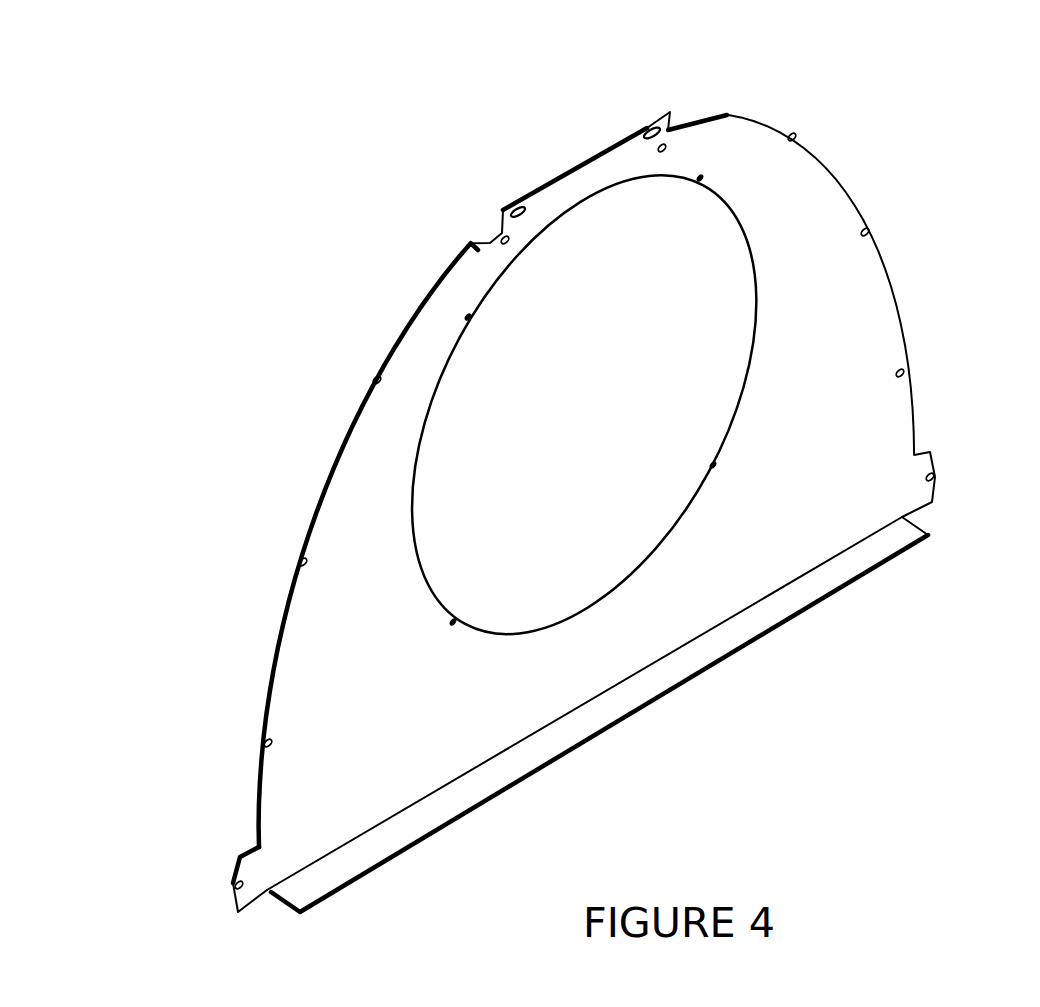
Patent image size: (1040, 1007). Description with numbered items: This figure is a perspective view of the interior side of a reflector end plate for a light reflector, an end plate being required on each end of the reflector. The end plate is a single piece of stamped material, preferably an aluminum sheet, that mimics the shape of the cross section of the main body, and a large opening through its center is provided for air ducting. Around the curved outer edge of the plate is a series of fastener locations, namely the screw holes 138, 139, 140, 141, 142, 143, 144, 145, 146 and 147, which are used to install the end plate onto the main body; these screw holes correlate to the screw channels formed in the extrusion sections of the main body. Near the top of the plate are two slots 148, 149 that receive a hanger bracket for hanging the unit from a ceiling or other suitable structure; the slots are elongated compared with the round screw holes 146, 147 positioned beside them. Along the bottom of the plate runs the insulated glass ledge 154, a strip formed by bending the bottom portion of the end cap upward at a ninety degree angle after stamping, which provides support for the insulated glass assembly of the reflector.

The screw hole 138 is at (934, 477).
The screw hole 139 is at (236, 885).
The screw hole 140 is at (904, 373).
The screw hole 141 is at (265, 743).
The screw hole 142 is at (869, 232).
The screw hole 143 is at (300, 562).
The screw hole 144 is at (795, 135).
The screw hole 145 is at (375, 378).
The screw hole 146 is at (666, 144).
The screw hole 147 is at (500, 240).
The slot for hangar bracket 148 is at (514, 207).
The slot for hangar bracket 149 is at (650, 125).
The insulated glass ledge 154 is at (873, 573).